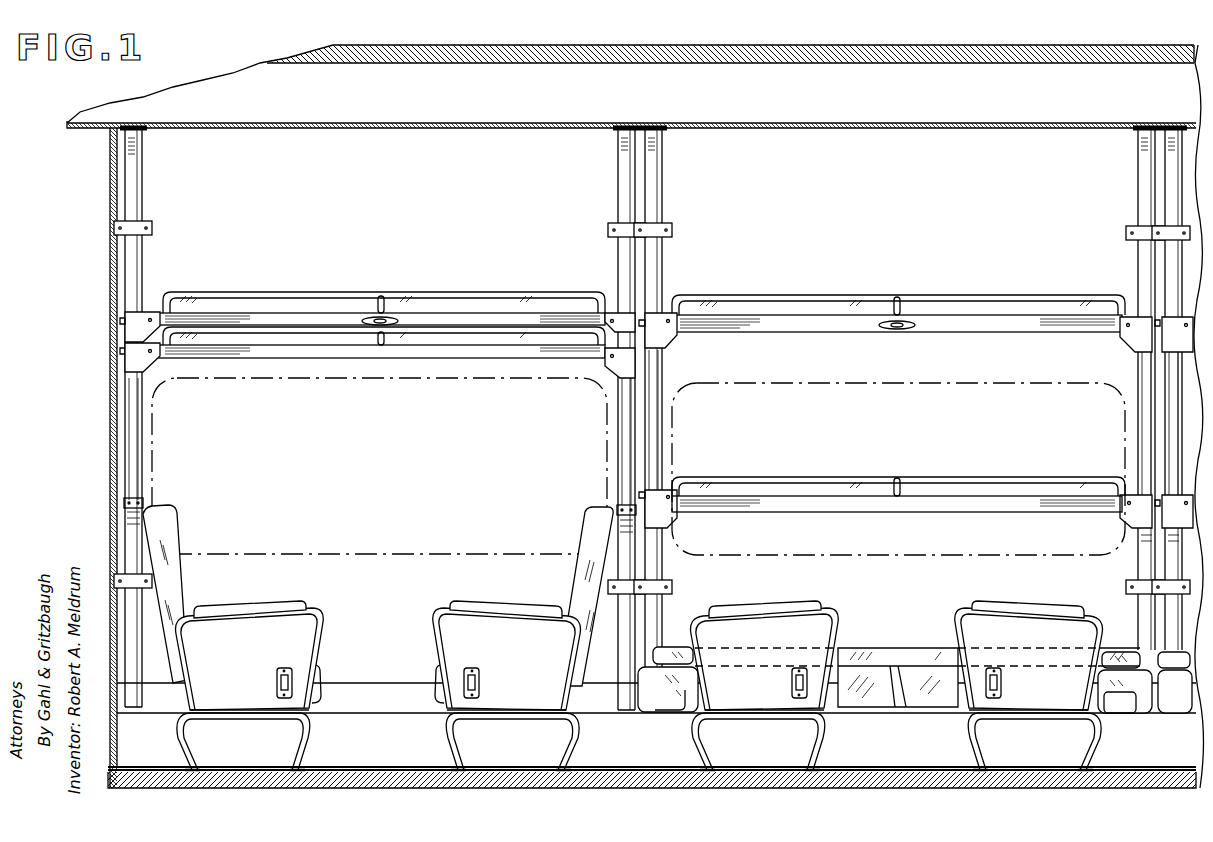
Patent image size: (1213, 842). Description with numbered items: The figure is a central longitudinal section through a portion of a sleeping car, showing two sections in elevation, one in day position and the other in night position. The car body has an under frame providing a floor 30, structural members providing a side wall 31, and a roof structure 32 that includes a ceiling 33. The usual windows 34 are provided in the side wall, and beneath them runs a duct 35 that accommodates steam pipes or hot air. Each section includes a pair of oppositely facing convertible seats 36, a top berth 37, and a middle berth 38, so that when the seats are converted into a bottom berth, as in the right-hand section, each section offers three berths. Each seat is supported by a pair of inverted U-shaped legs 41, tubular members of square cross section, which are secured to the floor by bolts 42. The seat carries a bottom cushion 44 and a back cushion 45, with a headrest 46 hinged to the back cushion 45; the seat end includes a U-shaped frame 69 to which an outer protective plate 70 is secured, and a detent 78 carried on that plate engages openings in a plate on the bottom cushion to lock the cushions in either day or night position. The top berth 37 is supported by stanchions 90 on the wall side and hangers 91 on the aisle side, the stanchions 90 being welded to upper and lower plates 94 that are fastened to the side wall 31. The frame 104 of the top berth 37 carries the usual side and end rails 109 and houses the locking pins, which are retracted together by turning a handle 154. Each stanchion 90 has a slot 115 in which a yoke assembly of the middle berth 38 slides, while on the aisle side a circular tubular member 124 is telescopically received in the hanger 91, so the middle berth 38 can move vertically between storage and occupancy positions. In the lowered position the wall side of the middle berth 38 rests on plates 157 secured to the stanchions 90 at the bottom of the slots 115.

The floor 30 is at (395, 776).
The side wall 31 is at (470, 226).
The roof structure 32 is at (700, 63).
The ceiling 33 is at (848, 126).
The windows 34 is at (838, 380).
The duct 35 is at (405, 717).
The convertible seats 36 is at (639, 647).
The top berth 37 is at (503, 288).
The middle berth 38 is at (480, 366).
The inverted U-shaped legs 41 is at (194, 742).
The bolts 42 is at (785, 769).
The bottom cushion 44 is at (319, 672).
The back cushion 45 is at (578, 575).
The headrest 46 is at (172, 522).
The U-shaped frame 69 is at (312, 625).
The outer protective plate 70 is at (265, 630).
The detent 78 is at (275, 685).
The stanchions 90 is at (135, 214).
The hangers 91 is at (136, 178).
The upper and lower plates 94 is at (152, 228).
The frame of the top berth 104 is at (242, 300).
The side and end rails 109 is at (380, 295).
The slot 115 is at (135, 420).
The circular tubular member 124 is at (655, 440).
The handle 154 is at (382, 318).
The plates 157 is at (135, 500).